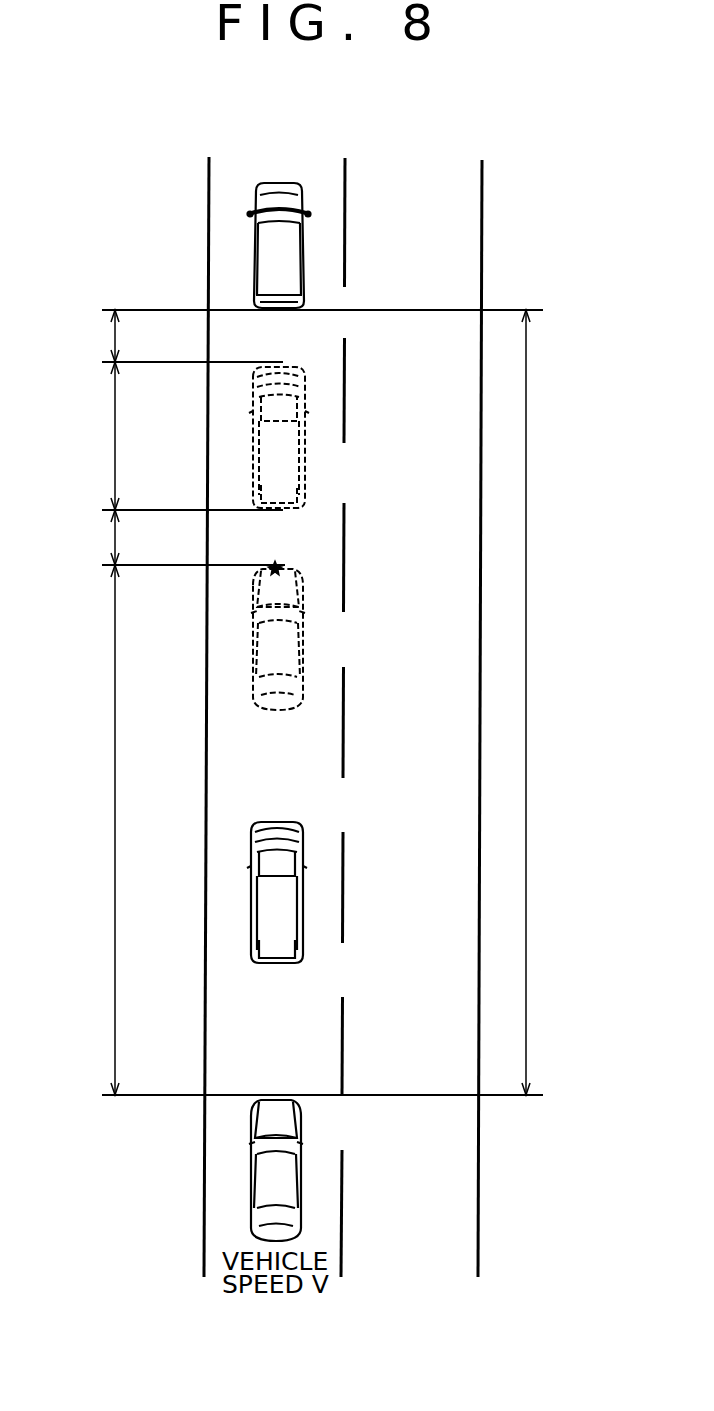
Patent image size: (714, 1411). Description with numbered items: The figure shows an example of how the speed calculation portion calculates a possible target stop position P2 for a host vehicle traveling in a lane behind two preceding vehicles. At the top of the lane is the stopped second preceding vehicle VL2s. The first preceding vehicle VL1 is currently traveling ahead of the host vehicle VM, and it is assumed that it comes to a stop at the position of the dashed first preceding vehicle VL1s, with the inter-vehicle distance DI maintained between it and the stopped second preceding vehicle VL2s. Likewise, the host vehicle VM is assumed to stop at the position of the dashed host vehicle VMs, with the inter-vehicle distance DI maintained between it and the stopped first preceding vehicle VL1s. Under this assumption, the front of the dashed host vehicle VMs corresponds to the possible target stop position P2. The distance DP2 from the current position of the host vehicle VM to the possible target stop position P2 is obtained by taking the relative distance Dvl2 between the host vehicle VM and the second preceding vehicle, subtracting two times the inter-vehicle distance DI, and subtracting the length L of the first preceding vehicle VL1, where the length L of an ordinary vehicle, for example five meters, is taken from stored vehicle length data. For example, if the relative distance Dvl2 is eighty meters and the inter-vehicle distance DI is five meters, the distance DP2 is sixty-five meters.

The second preceding vehicle VL2s is at (250, 263).
The first preceding vehicle VL1s is at (310, 452).
The possible target stop position P2 is at (276, 567).
The host vehicle VMs is at (308, 655).
The first preceding vehicle VL1 is at (246, 915).
The host vehicle VM is at (246, 1157).
The inter-vehicle distance DI is at (94, 437).
The length of the first preceding vehicle L is at (96, 436).
The distance to the possible target stop position DP2 is at (83, 830).
The relative distance between the host vehicle and the second preceding vehicle Dvl2 is at (564, 702).